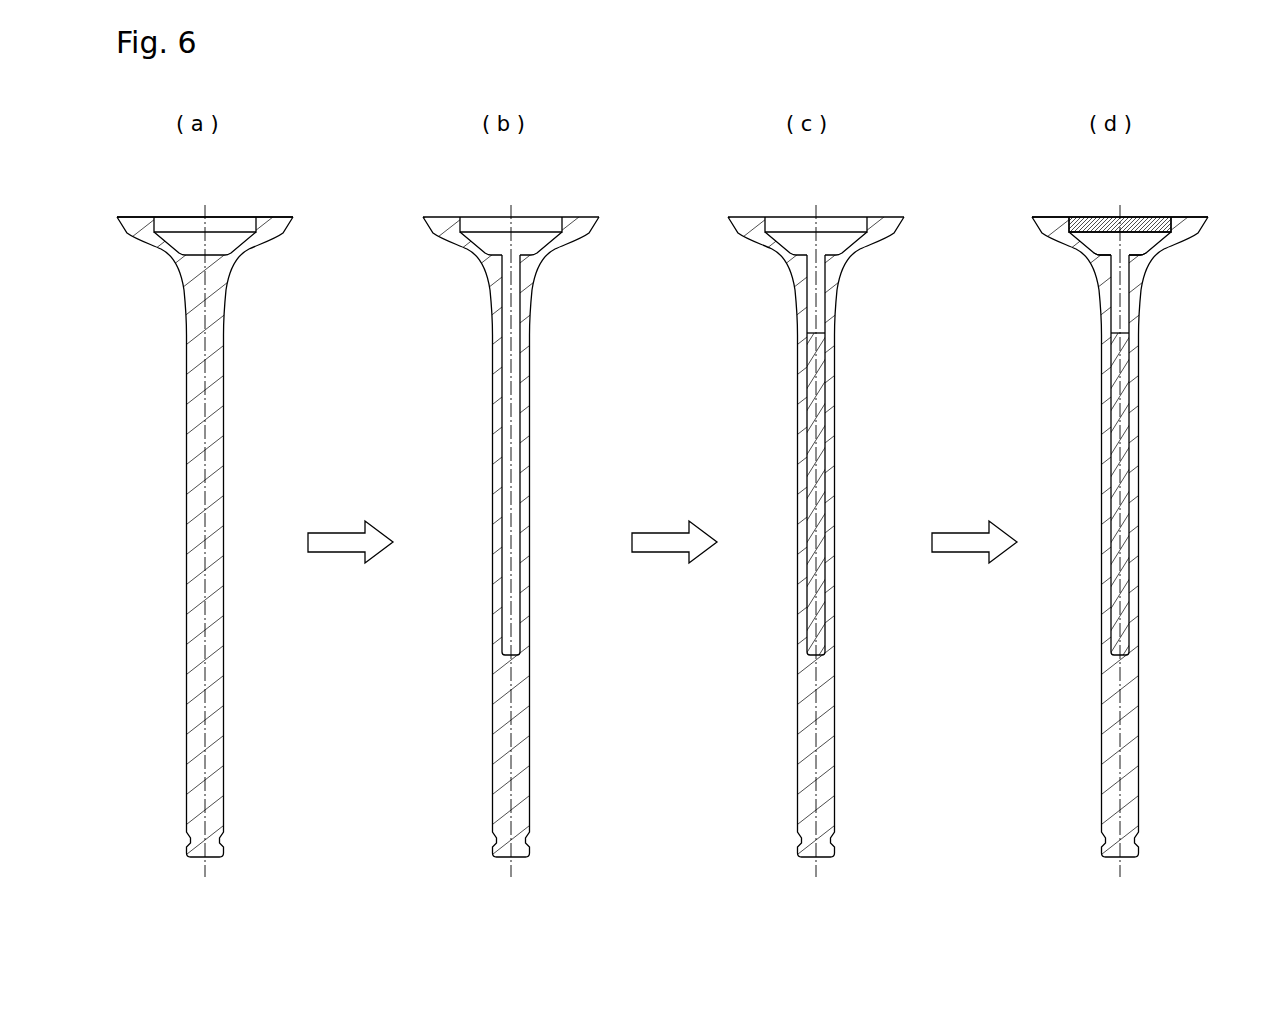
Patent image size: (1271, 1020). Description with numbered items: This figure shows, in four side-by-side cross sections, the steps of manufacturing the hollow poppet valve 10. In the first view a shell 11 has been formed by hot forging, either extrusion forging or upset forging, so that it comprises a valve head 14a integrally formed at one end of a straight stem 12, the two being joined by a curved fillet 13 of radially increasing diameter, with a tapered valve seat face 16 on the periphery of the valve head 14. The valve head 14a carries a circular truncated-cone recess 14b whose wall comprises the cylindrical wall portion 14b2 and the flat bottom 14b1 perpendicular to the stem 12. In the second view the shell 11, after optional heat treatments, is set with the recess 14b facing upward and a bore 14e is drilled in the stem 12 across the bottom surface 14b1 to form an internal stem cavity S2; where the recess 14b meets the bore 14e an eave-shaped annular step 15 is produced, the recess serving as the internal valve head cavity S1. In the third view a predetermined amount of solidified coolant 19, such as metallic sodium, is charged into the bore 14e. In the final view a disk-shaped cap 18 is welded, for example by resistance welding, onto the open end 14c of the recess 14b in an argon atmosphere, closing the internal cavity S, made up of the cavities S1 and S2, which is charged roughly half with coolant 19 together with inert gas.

The hollow poppet valve 10 is at (1113, 347).
The shell 11 is at (444, 347).
The stem 12 is at (696, 596).
The curved fillet 13 is at (649, 292).
The valve head 14 is at (662, 254).
The valve head 14a is at (728, 252).
The recess 14b is at (624, 191).
The flat bottom 14b1 is at (659, 209).
The cylindrical wall portion 14b2 is at (627, 198).
The open end 14c is at (816, 194).
The bore 14e is at (663, 455).
The eave-shape annular step 15 is at (816, 209).
The tapered valve seat face 16 is at (431, 249).
The cap 18 is at (1121, 201).
The coolant 19 is at (1001, 495).
The internal cavity S is at (1173, 301).
The internal valve head cavity S1 is at (1149, 265).
The internal stem cavity S2 is at (861, 455).